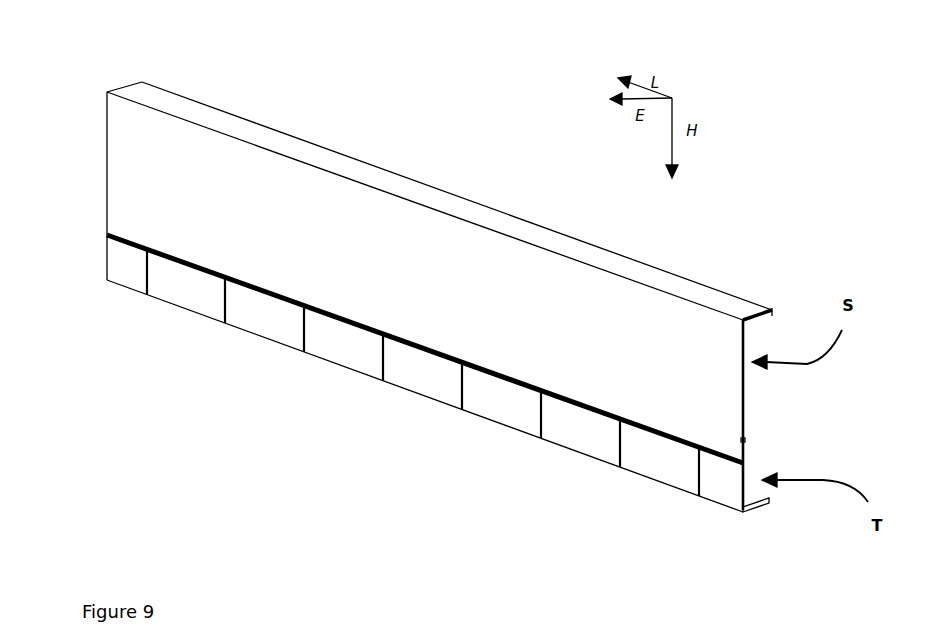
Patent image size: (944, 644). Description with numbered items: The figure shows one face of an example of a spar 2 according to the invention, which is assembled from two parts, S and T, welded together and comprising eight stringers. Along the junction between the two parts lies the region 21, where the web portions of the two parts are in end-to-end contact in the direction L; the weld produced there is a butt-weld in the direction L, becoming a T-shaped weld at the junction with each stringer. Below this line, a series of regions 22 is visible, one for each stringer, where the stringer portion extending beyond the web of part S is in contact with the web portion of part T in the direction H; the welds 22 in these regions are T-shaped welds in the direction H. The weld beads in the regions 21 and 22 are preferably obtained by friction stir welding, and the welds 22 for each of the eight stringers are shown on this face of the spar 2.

The spar 2 is at (313, 153).
The region where the web portions are in end-to-end contact 21 is at (168, 258).
The region where the stringer portion contacts the web portion 22 is at (300, 333).